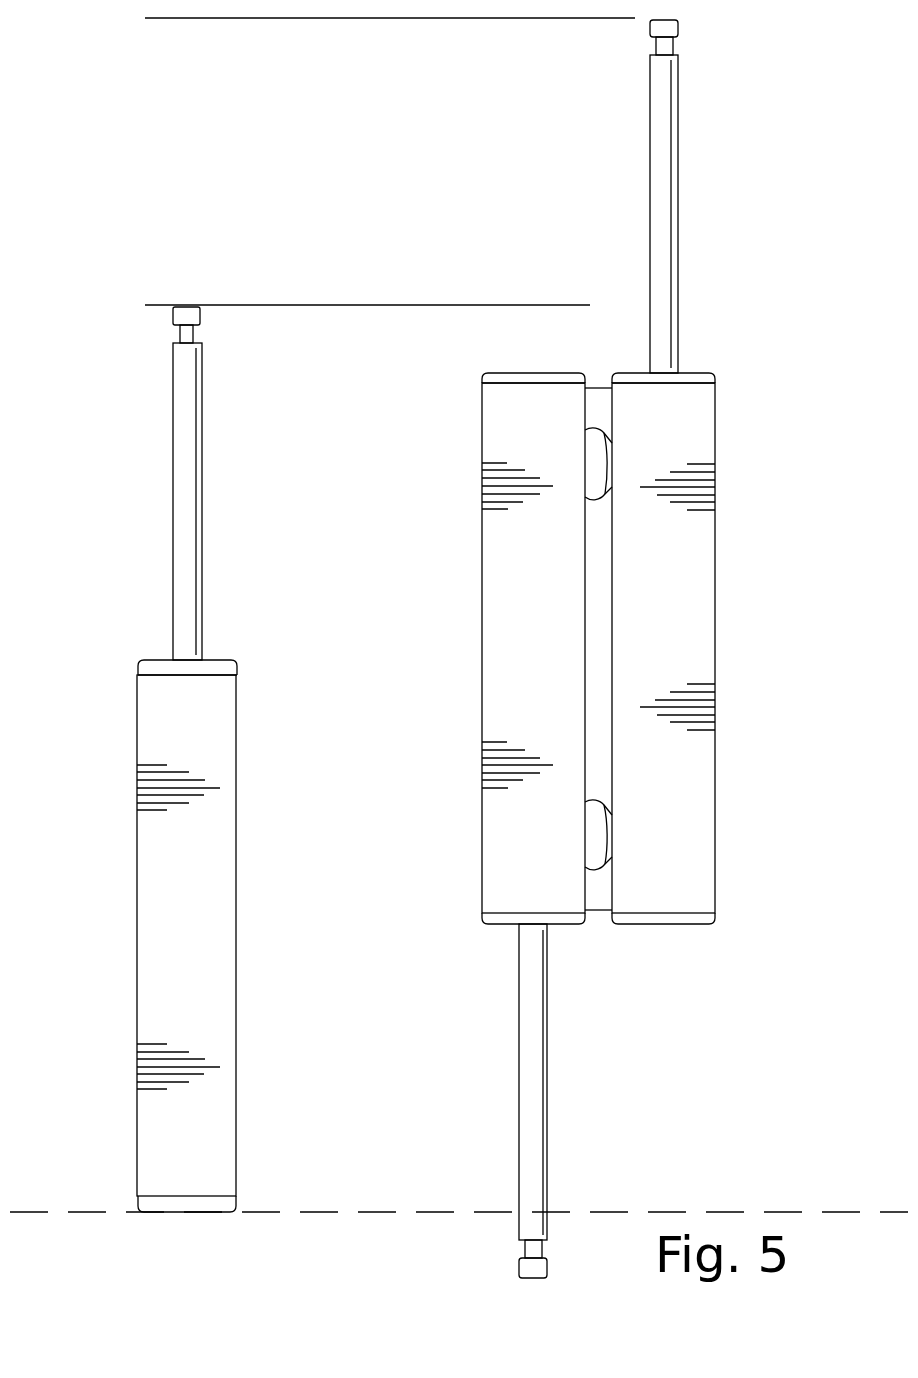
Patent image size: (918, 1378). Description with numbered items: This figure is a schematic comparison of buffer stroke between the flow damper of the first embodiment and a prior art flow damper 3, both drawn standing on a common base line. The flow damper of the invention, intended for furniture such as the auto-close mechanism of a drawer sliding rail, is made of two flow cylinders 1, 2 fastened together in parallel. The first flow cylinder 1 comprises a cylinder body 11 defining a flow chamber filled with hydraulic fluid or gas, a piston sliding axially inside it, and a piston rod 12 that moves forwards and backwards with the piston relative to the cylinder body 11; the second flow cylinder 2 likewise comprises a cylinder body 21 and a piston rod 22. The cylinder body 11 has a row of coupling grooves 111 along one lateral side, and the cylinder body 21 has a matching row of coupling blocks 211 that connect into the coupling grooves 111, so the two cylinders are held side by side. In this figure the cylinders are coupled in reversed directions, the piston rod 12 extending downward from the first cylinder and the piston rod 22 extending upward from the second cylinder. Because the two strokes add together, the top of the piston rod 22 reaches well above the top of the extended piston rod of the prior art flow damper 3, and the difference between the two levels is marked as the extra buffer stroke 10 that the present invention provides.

The first flow cylinder 1 is at (528, 825).
The cylinder body 11 is at (482, 678).
The piston rod 12 is at (519, 1064).
The coupling grooves 111 is at (598, 432).
The second flow cylinder 2 is at (699, 472).
The cylinder body 21 is at (715, 568).
The piston rod 22 is at (678, 242).
The coupling blocks 211 is at (596, 468).
The prior art flow damper 3 is at (248, 945).
The extra buffer stroke 10 is at (193, 18).